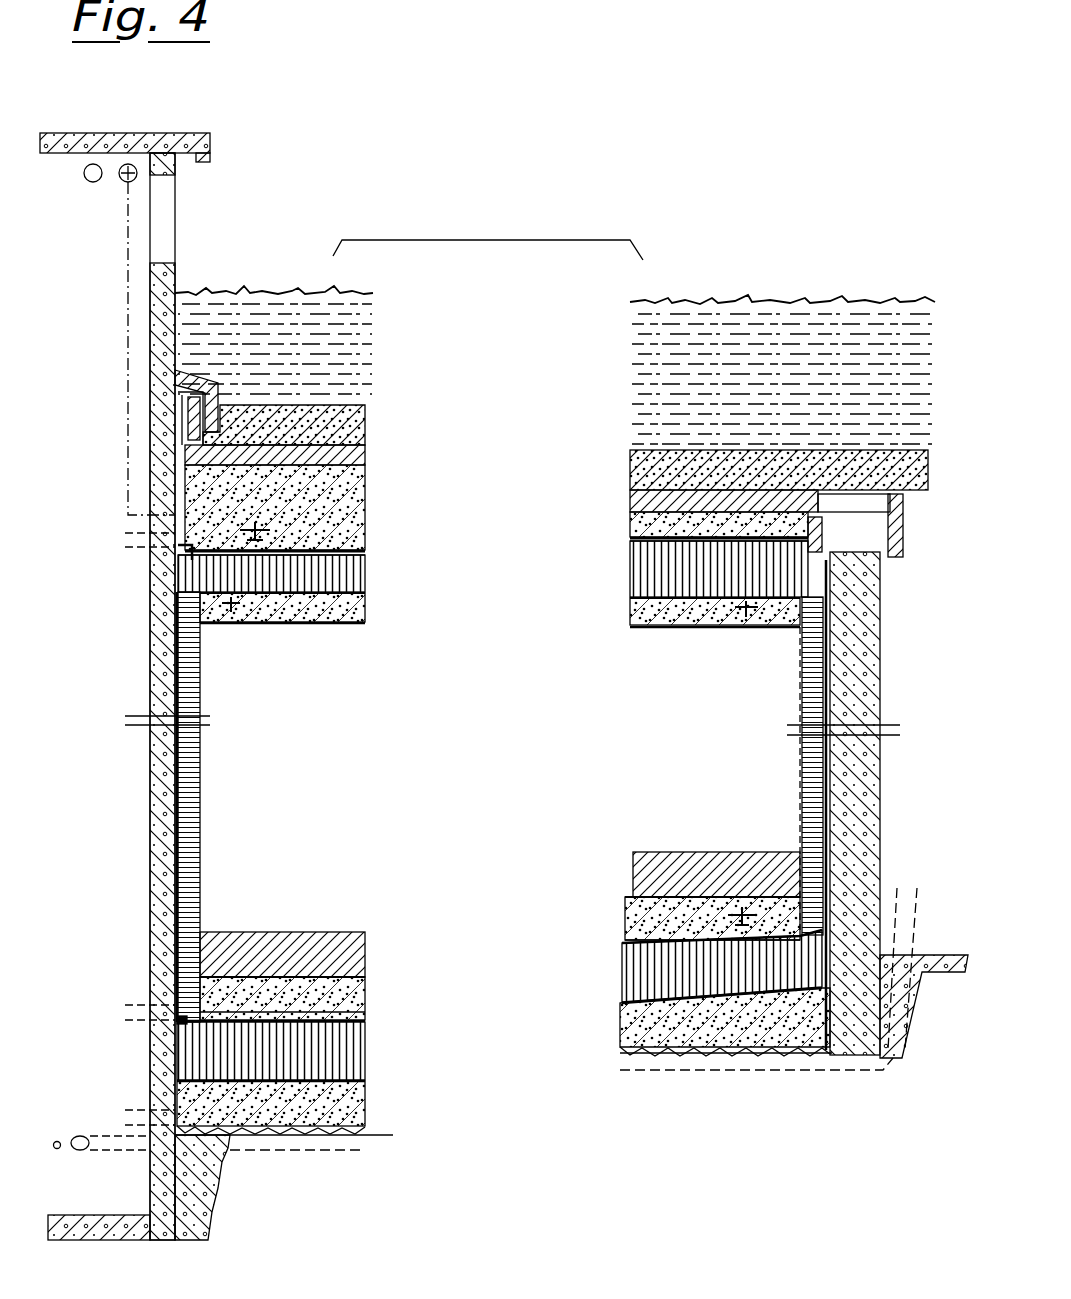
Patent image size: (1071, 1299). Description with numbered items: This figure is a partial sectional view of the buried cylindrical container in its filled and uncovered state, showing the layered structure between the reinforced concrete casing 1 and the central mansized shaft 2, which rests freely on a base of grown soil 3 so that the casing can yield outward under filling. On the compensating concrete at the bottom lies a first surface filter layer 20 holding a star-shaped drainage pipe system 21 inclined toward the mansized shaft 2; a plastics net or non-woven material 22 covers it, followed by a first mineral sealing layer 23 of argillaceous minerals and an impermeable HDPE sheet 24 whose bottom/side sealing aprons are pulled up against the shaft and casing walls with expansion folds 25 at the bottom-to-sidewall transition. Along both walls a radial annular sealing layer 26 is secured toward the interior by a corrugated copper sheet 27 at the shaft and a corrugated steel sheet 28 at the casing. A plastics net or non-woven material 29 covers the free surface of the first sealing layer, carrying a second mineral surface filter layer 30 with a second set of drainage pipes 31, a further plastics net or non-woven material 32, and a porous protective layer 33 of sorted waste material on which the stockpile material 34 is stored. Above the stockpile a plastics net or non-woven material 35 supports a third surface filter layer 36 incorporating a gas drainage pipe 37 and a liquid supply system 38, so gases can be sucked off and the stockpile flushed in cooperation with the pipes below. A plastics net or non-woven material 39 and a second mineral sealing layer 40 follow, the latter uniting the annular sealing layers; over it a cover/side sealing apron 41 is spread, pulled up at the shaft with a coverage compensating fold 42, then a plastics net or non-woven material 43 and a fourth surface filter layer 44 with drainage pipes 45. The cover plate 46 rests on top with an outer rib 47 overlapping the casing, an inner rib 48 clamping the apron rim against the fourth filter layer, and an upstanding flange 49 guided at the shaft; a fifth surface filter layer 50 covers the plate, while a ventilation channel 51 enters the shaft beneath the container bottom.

The reinforced concrete casing 1 is at (862, 792).
The mansized shaft 2 is at (160, 778).
The foundation 3 is at (302, 1193).
The first surface filter layer 20 is at (365, 1110).
The drainage pipe system 21 is at (727, 1068).
The plastics net or non-woven material 22 is at (365, 1080).
The first mineral sealing layer 23 is at (350, 1062).
The HDPE sheet 24 is at (370, 1024).
The expansion folds 25 is at (190, 1022).
The radial annular sealing layer 26 is at (812, 685).
The corrugated copper sheet 27 is at (205, 840).
The corrugated steel sheet 28 is at (800, 758).
The plastics net or non-woven material 29 is at (365, 1010).
The second mineral surface filter layer 30 is at (367, 983).
The second set of drainage pipes 31 is at (738, 922).
The plastics net or non-woven material 32 is at (365, 975).
The porous protective layer 33 is at (355, 932).
The stockpile material 34 is at (325, 789).
The plastics net or non-woven material 35 is at (358, 626).
The third surface filter layer 36 is at (365, 617).
The gas drainage pipe 37 is at (237, 628).
The liquid supply system 38 is at (742, 625).
The plastics net or non-woven material 39 is at (362, 595).
The second mineral sealing layer 40 is at (345, 578).
The cover/side sealing apron 41 is at (372, 562).
The coverage compensating fold 42 is at (190, 552).
The plastics net or non-woven material 43 is at (365, 552).
The fourth surface filter layer 44 is at (368, 496).
The drainage pipes 45 is at (365, 530).
The cover plate 46 is at (365, 462).
The outer rib 47 is at (905, 530).
The inner rib 48 is at (822, 532).
The upstanding flange 49 is at (178, 413).
The fifth surface filter layer 50 is at (350, 432).
The ventilation channel 51 is at (100, 1150).